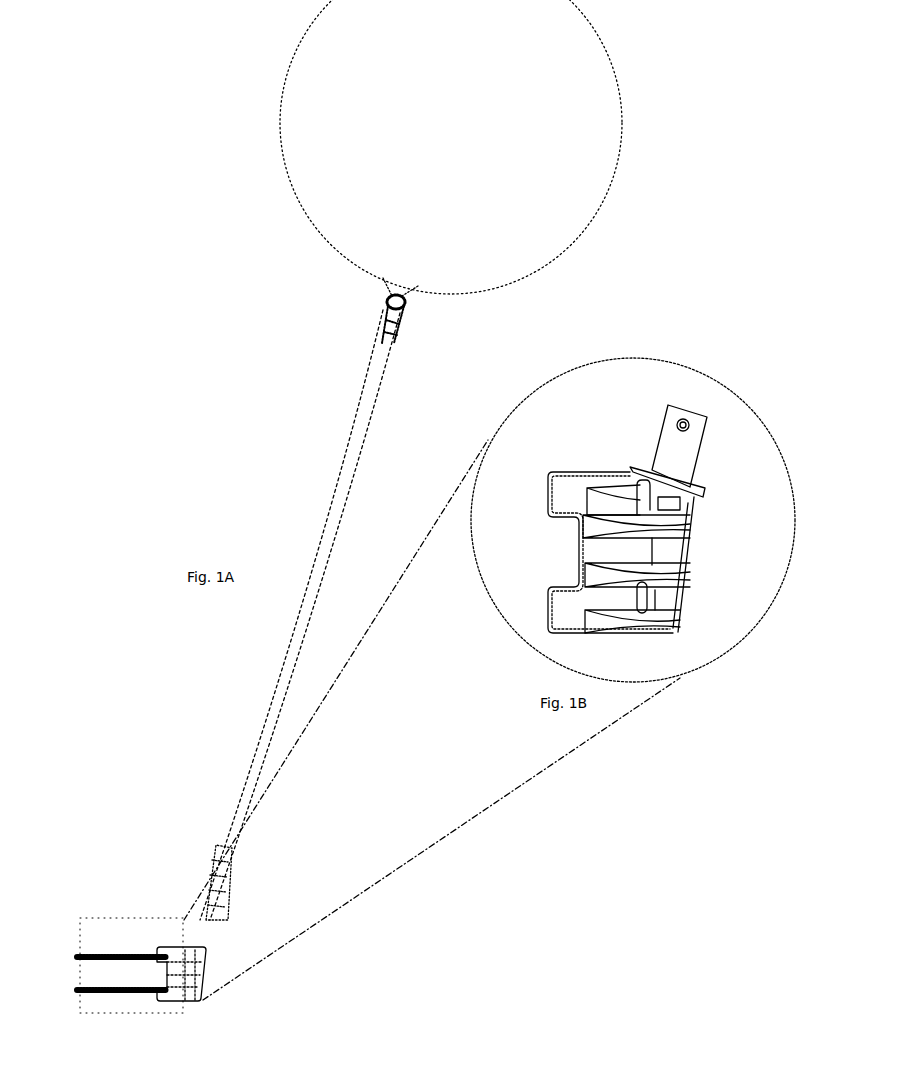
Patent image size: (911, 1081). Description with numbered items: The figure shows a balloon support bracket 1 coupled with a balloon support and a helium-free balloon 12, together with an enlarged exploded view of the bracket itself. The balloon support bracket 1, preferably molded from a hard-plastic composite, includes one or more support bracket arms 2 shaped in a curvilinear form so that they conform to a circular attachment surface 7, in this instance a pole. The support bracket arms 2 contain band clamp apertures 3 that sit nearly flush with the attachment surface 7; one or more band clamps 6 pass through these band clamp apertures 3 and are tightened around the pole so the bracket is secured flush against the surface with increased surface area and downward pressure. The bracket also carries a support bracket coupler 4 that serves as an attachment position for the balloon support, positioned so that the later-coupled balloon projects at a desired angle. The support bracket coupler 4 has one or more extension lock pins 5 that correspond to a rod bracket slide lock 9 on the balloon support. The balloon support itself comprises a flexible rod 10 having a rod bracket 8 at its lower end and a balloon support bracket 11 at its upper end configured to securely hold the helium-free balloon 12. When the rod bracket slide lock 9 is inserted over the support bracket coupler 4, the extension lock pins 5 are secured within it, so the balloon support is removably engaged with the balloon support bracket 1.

In FIG. 1B, the balloon support bracket 1 is at (655, 540).
In FIG. 1B, the support bracket arms 2 is at (578, 480).
In FIG. 1B, the band clamp apertures 3 is at (640, 500).
In FIG. 1B, the support bracket coupler 4 is at (673, 462).
In FIG. 1B, the extension lock pins 5 is at (693, 423).
In FIG. 1A, the band clamps 6 is at (78, 990).
In FIG. 1A, the attachment surface 7 is at (137, 930).
In FIG. 1A, the rod bracket 8 is at (220, 902).
In FIG. 1A, the rod bracket slide lock 9 is at (210, 923).
In FIG. 1A, the rod 10 is at (335, 512).
In FIG. 1A, the balloon support bracket 11 is at (390, 333).
In FIG. 1A, the helium-free balloon 12 is at (605, 47).